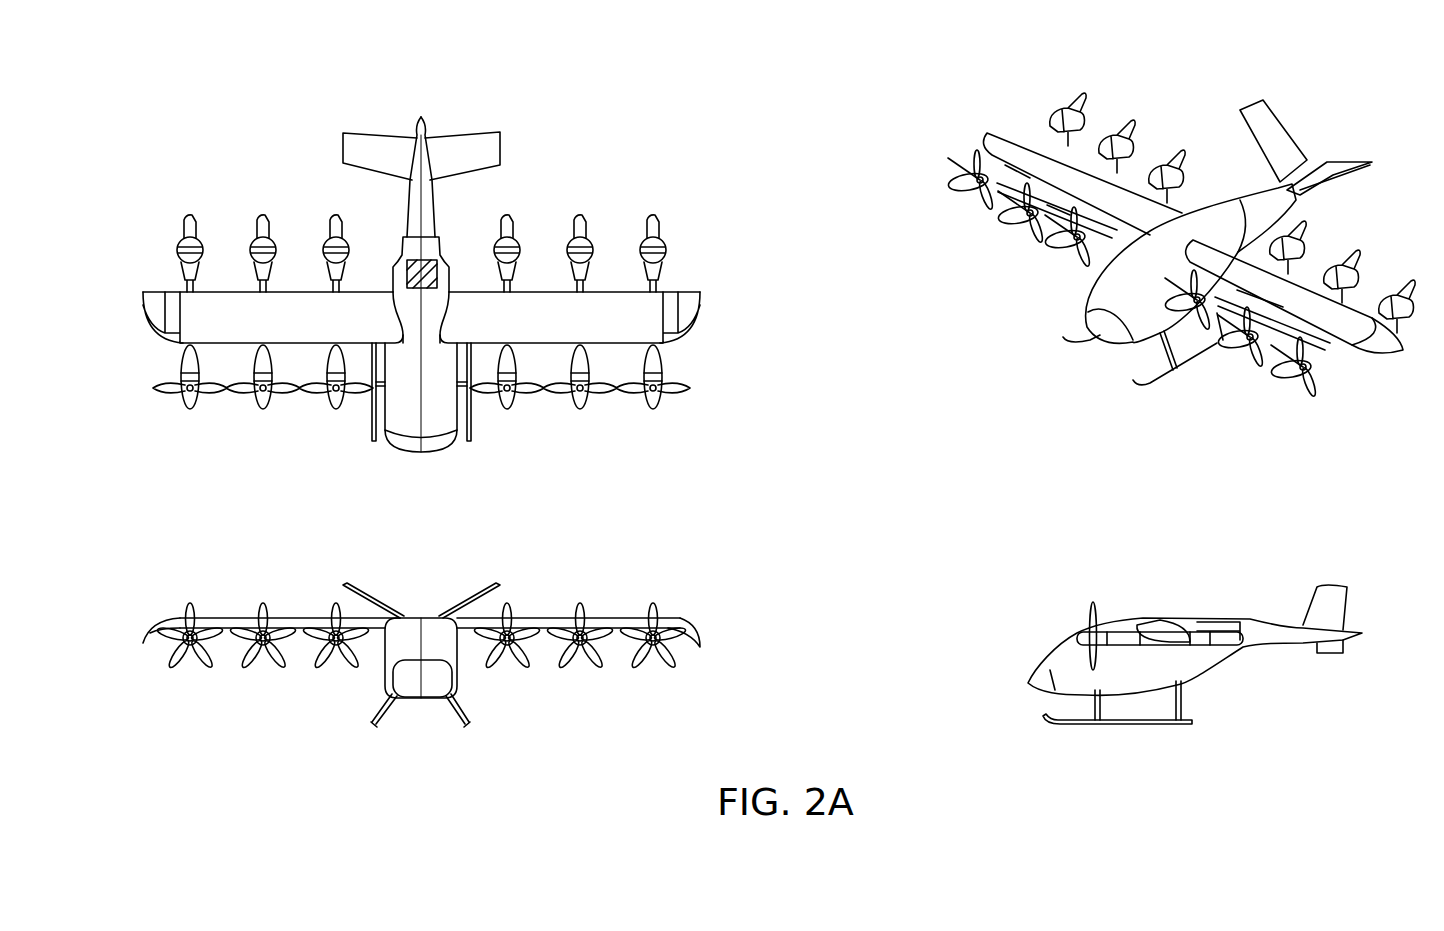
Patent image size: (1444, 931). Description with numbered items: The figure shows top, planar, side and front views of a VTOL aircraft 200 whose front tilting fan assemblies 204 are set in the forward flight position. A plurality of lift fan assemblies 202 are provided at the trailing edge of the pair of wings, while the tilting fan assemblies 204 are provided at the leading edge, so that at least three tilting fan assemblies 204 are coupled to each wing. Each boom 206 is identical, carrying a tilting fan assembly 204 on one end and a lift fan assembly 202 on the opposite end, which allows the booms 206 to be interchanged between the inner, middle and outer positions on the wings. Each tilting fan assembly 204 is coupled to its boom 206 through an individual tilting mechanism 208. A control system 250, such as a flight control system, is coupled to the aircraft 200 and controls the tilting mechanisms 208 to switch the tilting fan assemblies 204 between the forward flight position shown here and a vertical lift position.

The VTOL aircraft 200 is at (605, 89).
The lift fan assembly 202 is at (660, 242).
The tilting fan assembly 204 is at (446, 411).
The boom 206 is at (662, 352).
The tilting mechanism 208 is at (675, 402).
The control system 250 is at (409, 262).